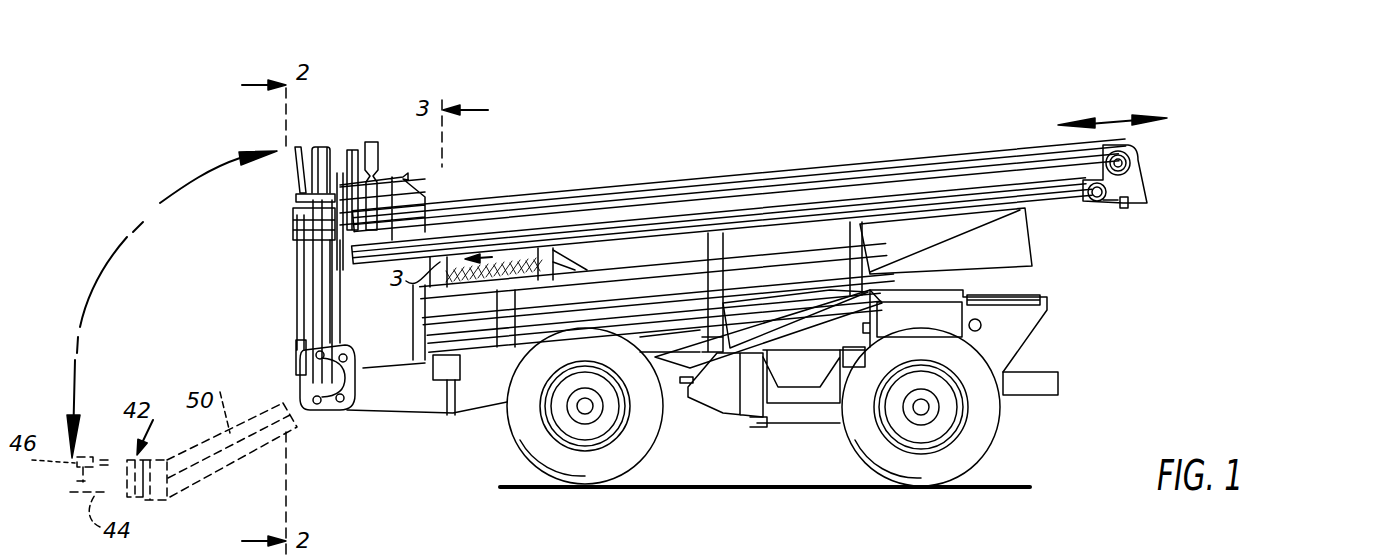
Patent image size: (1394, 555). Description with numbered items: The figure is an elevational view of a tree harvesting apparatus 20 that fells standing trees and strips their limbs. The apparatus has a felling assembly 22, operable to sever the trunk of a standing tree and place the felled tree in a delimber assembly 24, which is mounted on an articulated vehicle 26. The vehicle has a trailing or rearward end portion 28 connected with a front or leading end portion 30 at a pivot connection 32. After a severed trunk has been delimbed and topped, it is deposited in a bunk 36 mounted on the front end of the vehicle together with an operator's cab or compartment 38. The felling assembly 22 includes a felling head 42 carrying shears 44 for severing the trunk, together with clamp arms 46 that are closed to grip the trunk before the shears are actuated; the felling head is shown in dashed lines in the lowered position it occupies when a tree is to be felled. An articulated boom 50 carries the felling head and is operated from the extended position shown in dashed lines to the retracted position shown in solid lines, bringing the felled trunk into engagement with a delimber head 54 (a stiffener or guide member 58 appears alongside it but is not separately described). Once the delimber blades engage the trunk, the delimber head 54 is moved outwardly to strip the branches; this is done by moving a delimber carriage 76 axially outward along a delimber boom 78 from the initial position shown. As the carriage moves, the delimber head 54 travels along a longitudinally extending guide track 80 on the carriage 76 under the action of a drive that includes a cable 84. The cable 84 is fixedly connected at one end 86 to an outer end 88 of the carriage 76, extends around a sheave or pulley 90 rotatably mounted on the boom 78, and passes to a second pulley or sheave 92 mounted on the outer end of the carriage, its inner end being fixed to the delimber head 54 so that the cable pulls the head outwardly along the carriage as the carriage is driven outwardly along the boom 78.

The tree harvesting apparatus 20 is at (1280, 122).
The felling assembly 22 is at (65, 275).
The delimber assembly 24 is at (512, 103).
The articulated vehicle 26 is at (1068, 332).
The rearward end portion 28 is at (1030, 387).
The leading end portion 30 is at (681, 407).
The pivot connection 32 is at (757, 418).
The bunk 36 is at (453, 407).
The operator's cab 38 is at (420, 285).
The felling head 42 is at (279, 224).
The shears 44 is at (296, 198).
The clamp arms 46 is at (328, 152).
The articulated boom 50 is at (298, 296).
The delimber head 54 is at (424, 170).
The fork post 58 is at (380, 170).
The delimber carriage 76 is at (860, 195).
The delimber boom 78 is at (1063, 196).
The guide track 80 is at (756, 177).
The cable 84 is at (1117, 207).
The end of cable 86 is at (1128, 202).
The outer end of carriage 88 is at (1130, 180).
The pulley 90 is at (1087, 200).
The second pulley 92 is at (1133, 150).